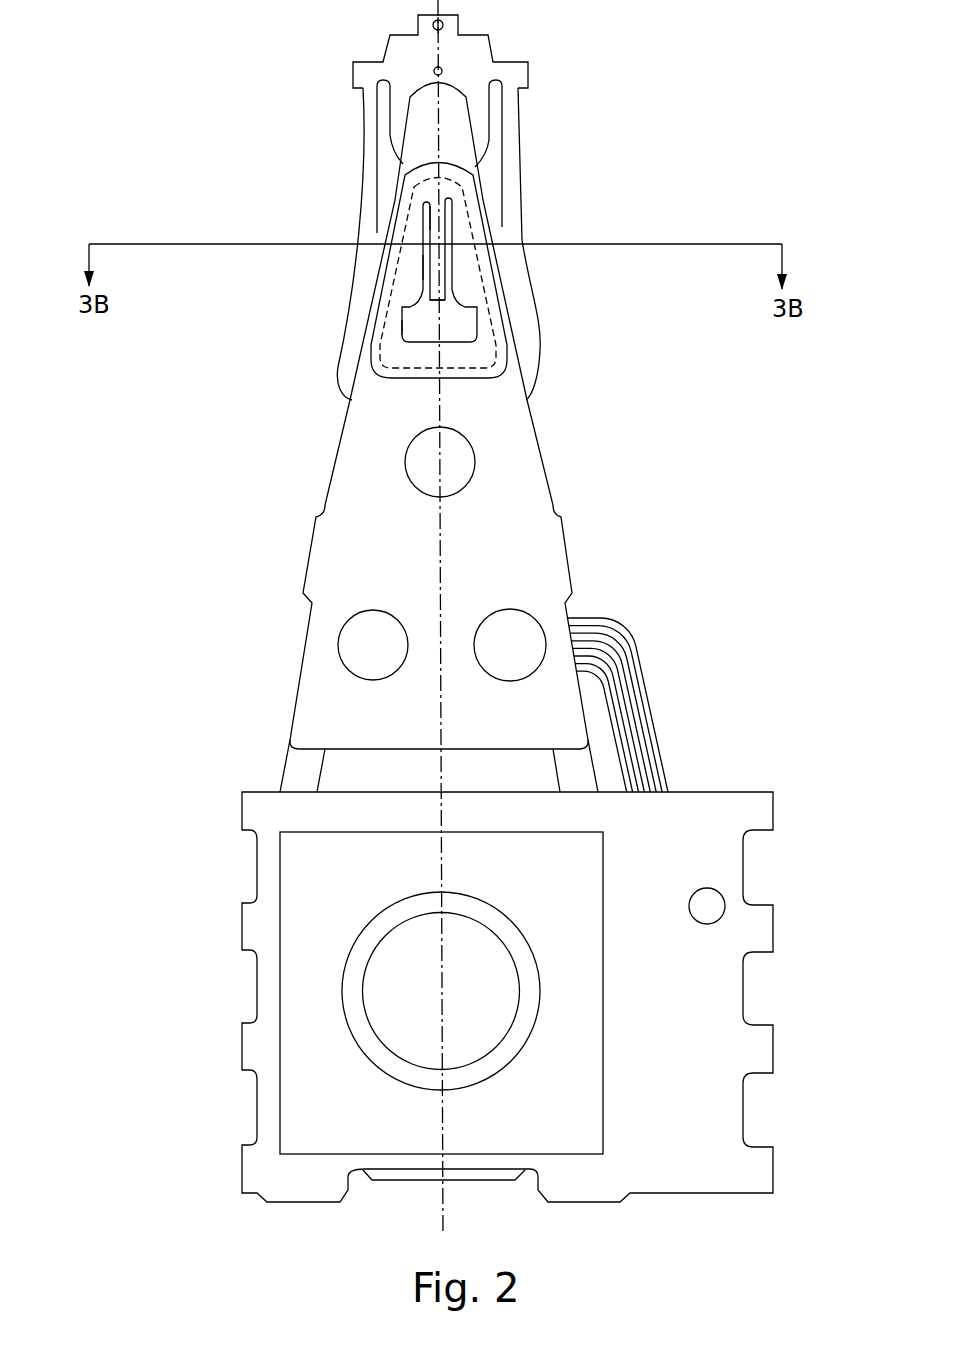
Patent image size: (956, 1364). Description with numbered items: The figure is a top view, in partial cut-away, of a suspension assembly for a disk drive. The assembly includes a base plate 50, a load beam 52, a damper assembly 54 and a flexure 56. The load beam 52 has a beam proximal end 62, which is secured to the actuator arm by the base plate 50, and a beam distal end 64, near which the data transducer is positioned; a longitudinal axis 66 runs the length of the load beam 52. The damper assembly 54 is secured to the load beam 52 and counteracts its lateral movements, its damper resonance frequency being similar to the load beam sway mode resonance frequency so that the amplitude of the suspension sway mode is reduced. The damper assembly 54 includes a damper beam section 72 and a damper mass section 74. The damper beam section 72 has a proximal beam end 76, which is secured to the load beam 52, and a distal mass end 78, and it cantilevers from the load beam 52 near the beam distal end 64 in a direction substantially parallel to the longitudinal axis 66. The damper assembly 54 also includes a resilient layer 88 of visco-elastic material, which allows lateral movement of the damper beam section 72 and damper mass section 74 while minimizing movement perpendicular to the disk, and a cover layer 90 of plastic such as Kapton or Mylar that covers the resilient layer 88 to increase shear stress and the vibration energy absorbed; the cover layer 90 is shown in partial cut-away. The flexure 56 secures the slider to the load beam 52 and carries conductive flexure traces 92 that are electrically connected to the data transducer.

The base plate 50 is at (313, 1064).
The load beam 52 is at (539, 579).
The damper assembly 54 is at (455, 296).
The flexure 56 is at (509, 176).
The beam proximal end 62 is at (299, 774).
The beam distal end 64 is at (449, 99).
The longitudinal axis 66 is at (450, 533).
The damper beam section 72 is at (431, 267).
The damper mass section 74 is at (409, 331).
The proximal beam end 76 is at (431, 207).
The distal mass end 78 is at (431, 307).
The resilient layer 88 is at (473, 255).
The cover layer 90 is at (511, 352).
The flexure traces 92 is at (629, 698).